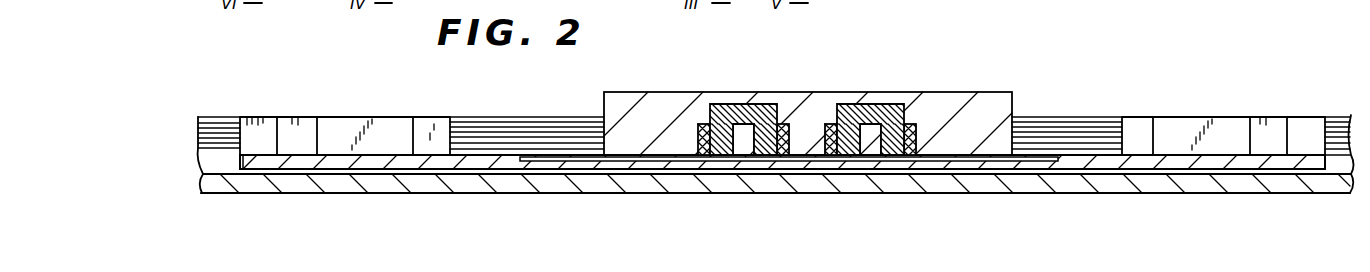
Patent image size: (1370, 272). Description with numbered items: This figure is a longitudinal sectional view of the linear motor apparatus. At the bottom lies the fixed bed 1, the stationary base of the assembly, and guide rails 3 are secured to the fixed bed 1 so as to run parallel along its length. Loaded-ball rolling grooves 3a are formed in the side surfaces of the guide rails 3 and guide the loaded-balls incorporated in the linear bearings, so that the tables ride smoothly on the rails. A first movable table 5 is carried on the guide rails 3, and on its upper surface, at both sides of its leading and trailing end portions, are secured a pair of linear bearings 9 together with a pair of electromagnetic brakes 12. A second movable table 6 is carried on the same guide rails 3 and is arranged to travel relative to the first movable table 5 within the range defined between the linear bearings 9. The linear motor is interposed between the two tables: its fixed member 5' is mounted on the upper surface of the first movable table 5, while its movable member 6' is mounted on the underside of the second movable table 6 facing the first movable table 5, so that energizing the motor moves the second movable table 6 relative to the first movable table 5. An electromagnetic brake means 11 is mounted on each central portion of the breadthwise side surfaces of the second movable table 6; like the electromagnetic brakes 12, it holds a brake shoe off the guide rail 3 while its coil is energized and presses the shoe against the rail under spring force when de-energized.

The fixed bed 1 is at (560, 186).
The guide rail 3 is at (218, 117).
The loaded-ball rolling groove 3a is at (196, 140).
The first movable table 5 is at (782, 193).
The fixed member 5' is at (787, 110).
The second movable table 6 is at (808, 105).
The movable member 6' is at (807, 106).
The linear bearing 9 is at (403, 117).
The electromagnetic brake means 11 is at (818, 123).
The electromagnetic brake 12 is at (258, 117).